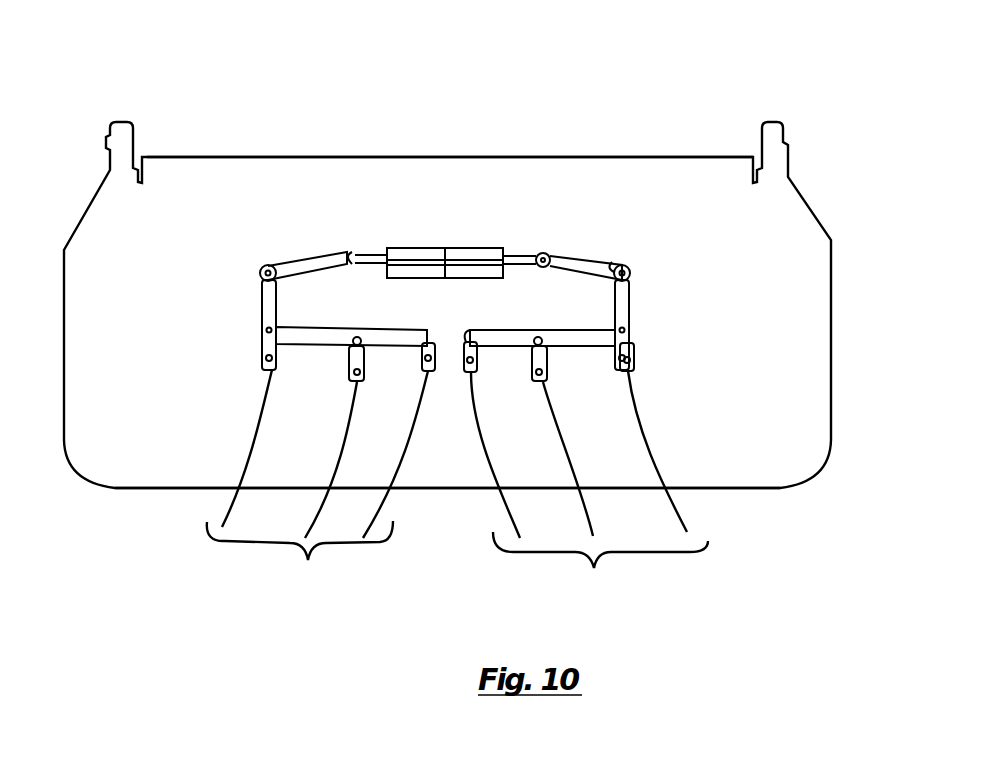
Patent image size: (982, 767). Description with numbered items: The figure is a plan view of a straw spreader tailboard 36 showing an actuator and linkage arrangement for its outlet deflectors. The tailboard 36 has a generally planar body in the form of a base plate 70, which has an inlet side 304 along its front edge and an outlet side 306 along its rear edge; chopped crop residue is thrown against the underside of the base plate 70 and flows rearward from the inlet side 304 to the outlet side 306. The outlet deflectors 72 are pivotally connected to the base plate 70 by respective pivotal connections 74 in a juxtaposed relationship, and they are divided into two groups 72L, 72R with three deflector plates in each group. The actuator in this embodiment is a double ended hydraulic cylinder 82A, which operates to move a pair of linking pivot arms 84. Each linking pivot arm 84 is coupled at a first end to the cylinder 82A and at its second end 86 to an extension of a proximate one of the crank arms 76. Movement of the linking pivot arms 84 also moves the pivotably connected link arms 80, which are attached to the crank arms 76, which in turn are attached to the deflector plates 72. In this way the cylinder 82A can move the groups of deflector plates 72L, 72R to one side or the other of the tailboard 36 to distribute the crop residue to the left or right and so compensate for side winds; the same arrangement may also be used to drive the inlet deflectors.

The straw spreader tailboard 36 is at (72, 502).
The base plate 70 is at (170, 193).
The outlet deflectors 72 is at (258, 443).
The left group of deflector plates 72L is at (300, 568).
The right group of deflector plates 72R is at (600, 576).
The pivotal connections 74 is at (353, 372).
The crank arms 76 is at (262, 303).
The link arms 80 is at (310, 332).
The double ended hydraulic cylinder 82A is at (398, 240).
The linking pivot arms 84 is at (312, 265).
The second end of linking pivot arm 86 is at (259, 268).
The inlet side 304 is at (630, 157).
The outlet side 306 is at (148, 490).